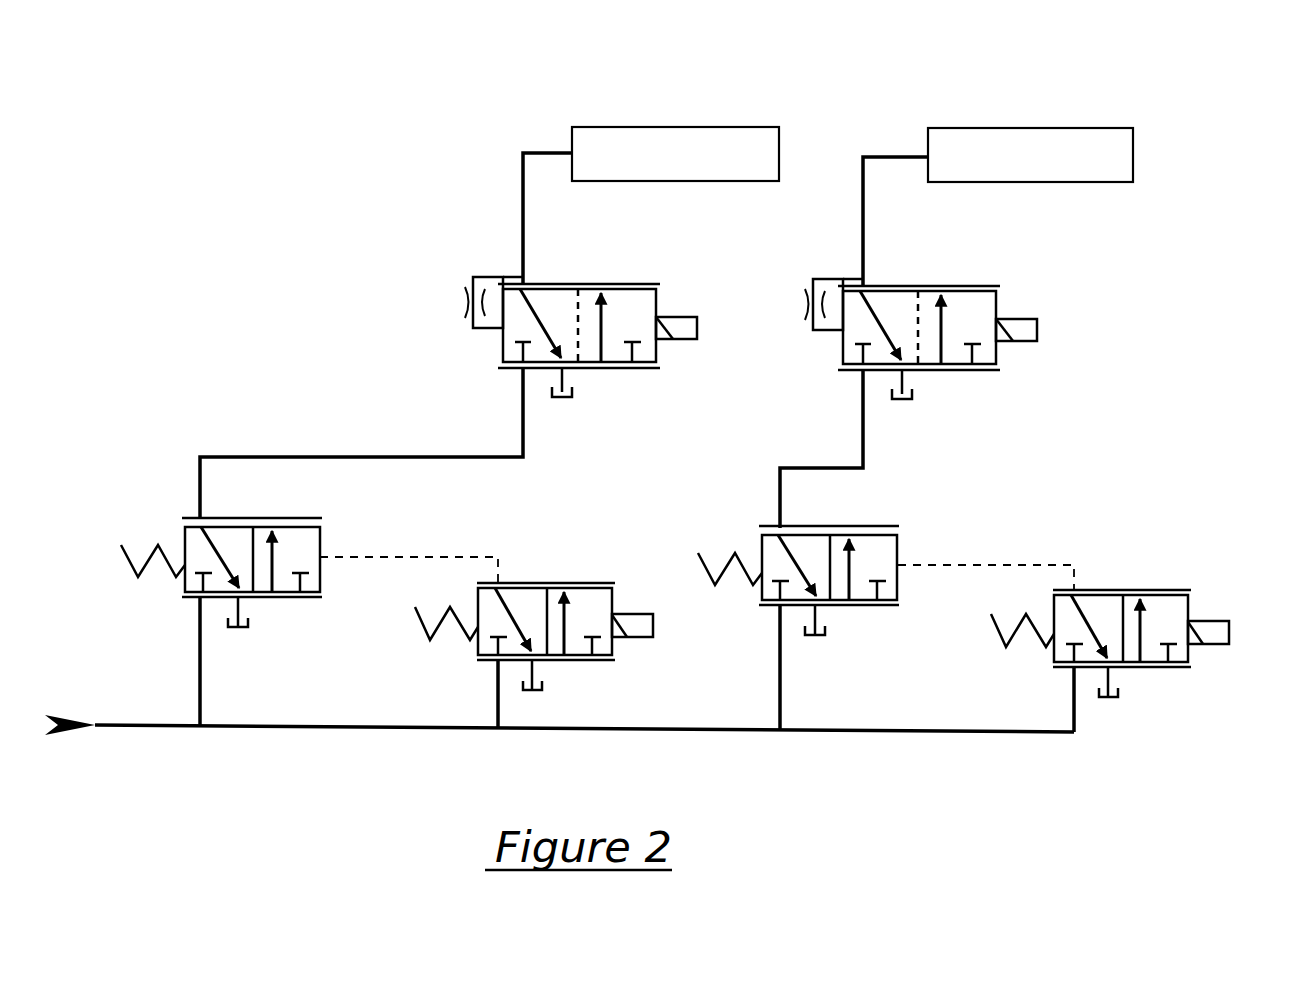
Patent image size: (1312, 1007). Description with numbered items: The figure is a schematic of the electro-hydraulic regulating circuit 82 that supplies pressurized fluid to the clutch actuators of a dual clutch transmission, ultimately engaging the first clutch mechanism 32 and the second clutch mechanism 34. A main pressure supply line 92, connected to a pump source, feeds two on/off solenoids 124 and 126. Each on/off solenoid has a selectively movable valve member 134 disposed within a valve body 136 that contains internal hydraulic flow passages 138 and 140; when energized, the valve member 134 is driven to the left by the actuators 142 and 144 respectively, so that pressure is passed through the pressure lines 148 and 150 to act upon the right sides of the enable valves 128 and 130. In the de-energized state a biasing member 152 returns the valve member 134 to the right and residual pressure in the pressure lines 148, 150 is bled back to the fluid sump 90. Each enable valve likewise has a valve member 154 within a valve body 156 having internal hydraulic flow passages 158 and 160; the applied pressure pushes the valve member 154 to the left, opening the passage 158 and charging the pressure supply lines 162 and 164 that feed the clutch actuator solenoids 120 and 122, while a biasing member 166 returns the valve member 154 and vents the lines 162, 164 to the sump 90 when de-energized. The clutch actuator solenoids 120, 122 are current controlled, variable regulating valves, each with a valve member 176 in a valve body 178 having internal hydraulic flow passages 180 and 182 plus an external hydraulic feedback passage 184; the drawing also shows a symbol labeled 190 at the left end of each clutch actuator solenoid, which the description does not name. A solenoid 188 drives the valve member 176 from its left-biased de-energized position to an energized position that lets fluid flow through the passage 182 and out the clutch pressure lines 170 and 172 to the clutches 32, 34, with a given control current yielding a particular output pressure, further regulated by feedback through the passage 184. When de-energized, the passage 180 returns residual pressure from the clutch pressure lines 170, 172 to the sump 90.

The regulating circuit 82 is at (441, 139).
The first clutch mechanism 32 is at (726, 120).
The second clutch mechanism 34 is at (1084, 117).
The fluid sump 90 is at (577, 400).
The main pressure supply line 92 is at (703, 740).
The first clutch actuator solenoid 120 is at (603, 381).
The second clutch actuator solenoid 122 is at (956, 382).
The first on/off solenoid 124 is at (612, 677).
The second on/off solenoid 126 is at (1190, 684).
The first enable valve 128 is at (286, 607).
The second enable valve 130 is at (868, 613).
The valve member 134 is at (586, 601).
The valve body 136 is at (537, 583).
The internal hydraulic flow passage 138 is at (501, 612).
The internal hydraulic flow passage 140 is at (568, 617).
The actuator 142 is at (624, 640).
The actuator 144 is at (1200, 647).
The pressure line 148 is at (426, 557).
The pressure line 150 is at (1004, 563).
The biasing member 152 is at (424, 637).
The valve member 154 is at (311, 537).
The valve body 156 is at (225, 517).
The internal hydraulic flow passage 158 is at (212, 553).
The internal hydraulic flow passage 160 is at (273, 561).
The pressure supply line 162 is at (472, 458).
The pressure supply line 164 is at (836, 465).
The biasing member 166 is at (160, 551).
The clutch pressure line 170 is at (527, 230).
The clutch pressure line 172 is at (867, 238).
The valve member 176 is at (640, 305).
The valve body 178 is at (652, 283).
The internal hydraulic flow passage 180 is at (550, 283).
The internal hydraulic flow passage 182 is at (612, 283).
The external hydraulic feedback passage 184 is at (496, 276).
The solenoid 188 is at (667, 343).
The pilot actuator spring 190 is at (460, 292).